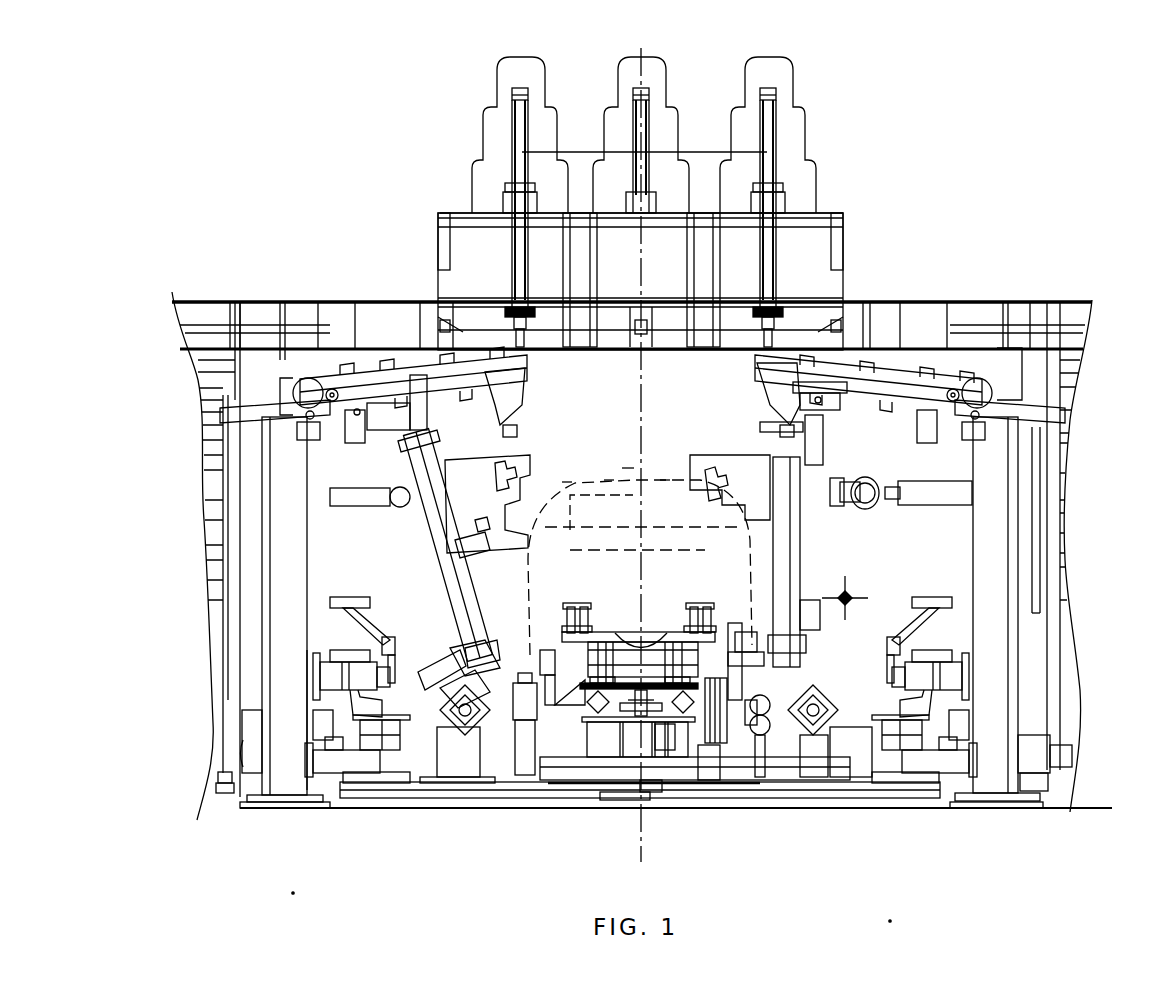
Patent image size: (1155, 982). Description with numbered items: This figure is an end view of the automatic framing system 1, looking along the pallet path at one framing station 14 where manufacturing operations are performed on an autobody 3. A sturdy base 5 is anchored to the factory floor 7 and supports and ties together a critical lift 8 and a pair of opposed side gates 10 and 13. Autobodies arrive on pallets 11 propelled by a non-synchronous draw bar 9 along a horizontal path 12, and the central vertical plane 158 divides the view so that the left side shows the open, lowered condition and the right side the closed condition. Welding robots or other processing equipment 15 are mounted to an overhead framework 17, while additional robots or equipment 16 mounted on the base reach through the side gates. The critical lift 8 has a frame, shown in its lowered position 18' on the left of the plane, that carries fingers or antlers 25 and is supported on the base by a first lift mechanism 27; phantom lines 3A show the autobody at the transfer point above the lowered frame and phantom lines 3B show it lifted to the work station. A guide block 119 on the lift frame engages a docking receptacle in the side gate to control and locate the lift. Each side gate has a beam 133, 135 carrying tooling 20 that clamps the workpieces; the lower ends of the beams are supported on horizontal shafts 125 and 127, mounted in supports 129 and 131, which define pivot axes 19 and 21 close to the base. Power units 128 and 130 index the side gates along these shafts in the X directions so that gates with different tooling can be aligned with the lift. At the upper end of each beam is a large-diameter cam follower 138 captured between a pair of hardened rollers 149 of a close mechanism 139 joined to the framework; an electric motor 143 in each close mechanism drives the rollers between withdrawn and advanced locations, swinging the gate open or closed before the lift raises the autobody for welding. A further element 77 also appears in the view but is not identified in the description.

The automatic framing system 1 is at (897, 226).
The autobody 3 is at (608, 478).
The autobody at transfer point (phantom lines) 3A is at (568, 480).
The autobody at work station (phantom lines) 3B is at (665, 478).
The base 5 is at (510, 790).
The factory floor 7 is at (882, 833).
The critical lift 8 is at (624, 798).
The non synchronous draw bar 9 is at (652, 793).
The side gate 10 is at (425, 527).
The pallet 11 is at (660, 625).
The horizontal path 12 is at (745, 640).
The side gate 13 is at (803, 604).
The framing station 14 is at (628, 462).
The welding robots or other processing equipment 15 is at (460, 275).
The additional welding robots or other equipment 16 is at (882, 507).
The overhead framework 17 is at (885, 322).
The critical lift frame in lowered position 18' is at (456, 662).
The axis 19 is at (468, 752).
The tooling 20 is at (608, 504).
The axis 21 is at (805, 728).
The fingers or antlers 25 is at (580, 615).
The first lift mechanism 27 is at (705, 770).
The drive unit 77 is at (1047, 752).
The guide block 119 is at (522, 683).
The horizontal shaft 125 is at (445, 722).
The horizontal shaft 127 is at (822, 752).
The power unit 128 is at (250, 725).
The support 129 is at (440, 782).
The power unit 130 is at (952, 728).
The support 131 is at (838, 740).
The beam 133 is at (460, 573).
The beam 135 is at (792, 522).
The cam follower 138 is at (385, 425).
The close mechanism 139 is at (335, 352).
The electric motor 143 is at (300, 380).
The hardened rollers 149 is at (404, 415).
The central vertical plane 158 is at (640, 500).